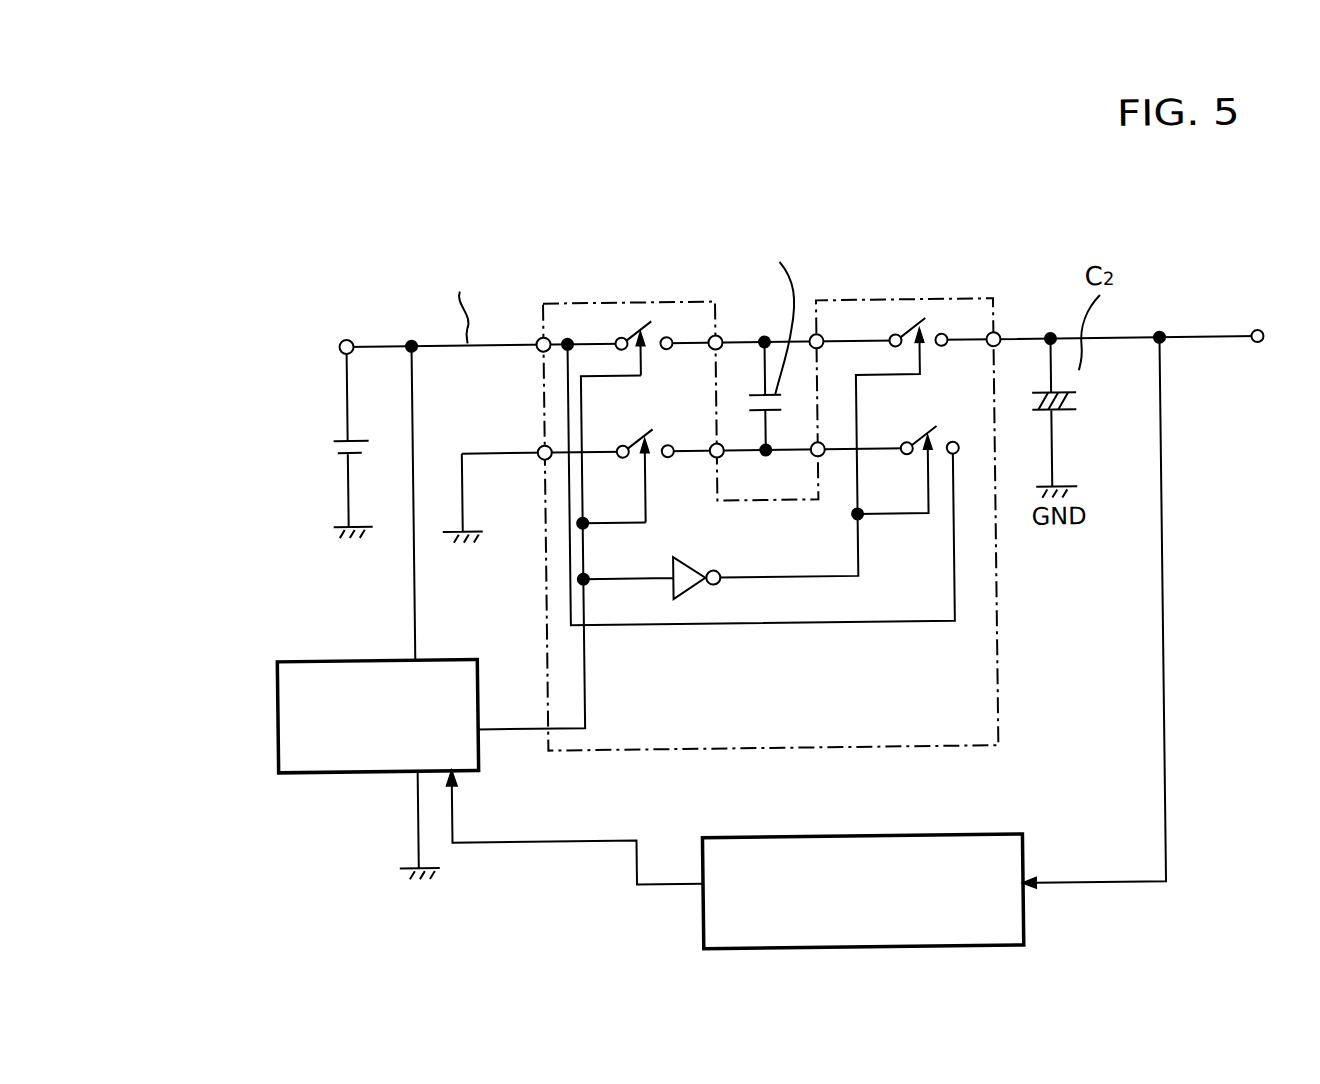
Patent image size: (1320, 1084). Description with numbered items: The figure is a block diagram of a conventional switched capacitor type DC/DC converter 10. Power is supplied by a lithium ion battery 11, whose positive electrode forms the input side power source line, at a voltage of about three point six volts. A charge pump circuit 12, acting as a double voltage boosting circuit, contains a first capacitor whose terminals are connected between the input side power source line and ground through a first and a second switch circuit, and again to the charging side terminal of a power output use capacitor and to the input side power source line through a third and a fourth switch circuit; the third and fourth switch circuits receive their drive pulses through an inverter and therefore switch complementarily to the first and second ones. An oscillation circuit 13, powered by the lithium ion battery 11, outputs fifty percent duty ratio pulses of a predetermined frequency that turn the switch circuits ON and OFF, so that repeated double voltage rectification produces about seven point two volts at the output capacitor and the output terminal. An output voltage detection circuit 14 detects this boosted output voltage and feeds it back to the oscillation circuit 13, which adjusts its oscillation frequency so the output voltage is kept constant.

The DC/DC converter 10 is at (727, 186).
The lithium ion battery 11 is at (339, 435).
The charge pump circuit 12 is at (909, 302).
The oscillation circuit 13 is at (324, 656).
The output voltage detection circuit 14 is at (947, 838).